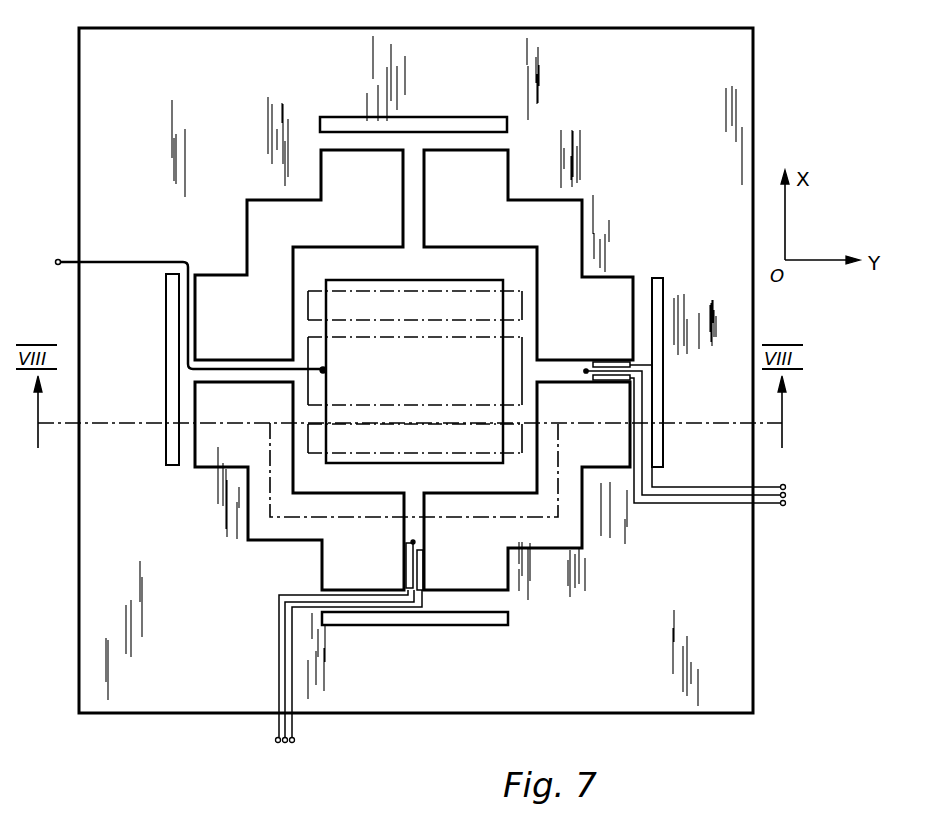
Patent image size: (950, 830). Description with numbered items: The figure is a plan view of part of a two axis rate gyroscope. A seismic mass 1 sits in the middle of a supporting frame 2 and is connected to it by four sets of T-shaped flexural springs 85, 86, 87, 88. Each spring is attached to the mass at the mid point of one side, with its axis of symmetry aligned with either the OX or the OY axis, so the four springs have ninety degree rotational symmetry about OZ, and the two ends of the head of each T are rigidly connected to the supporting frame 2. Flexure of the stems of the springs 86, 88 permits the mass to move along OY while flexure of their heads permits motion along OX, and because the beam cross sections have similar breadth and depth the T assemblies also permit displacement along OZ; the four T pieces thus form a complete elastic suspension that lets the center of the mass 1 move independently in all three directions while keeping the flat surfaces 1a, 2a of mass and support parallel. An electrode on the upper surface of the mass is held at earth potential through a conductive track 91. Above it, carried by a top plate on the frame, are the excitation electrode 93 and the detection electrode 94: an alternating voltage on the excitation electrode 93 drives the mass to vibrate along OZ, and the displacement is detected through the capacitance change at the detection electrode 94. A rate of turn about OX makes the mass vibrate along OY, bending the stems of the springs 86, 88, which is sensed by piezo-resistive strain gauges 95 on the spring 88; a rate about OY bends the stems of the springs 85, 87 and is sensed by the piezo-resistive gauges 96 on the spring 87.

The mass 1 is at (477, 244).
The flat surface of mass 1a is at (358, 262).
The supporting frame 2 is at (763, 600).
The flat surface of support 2a is at (712, 102).
The T-shaped flexural spring 85 is at (188, 385).
The T-shaped flexural spring 86 is at (438, 140).
The T-shaped flexural spring 87 is at (643, 333).
The T-shaped flexural spring 88 is at (433, 605).
The conductive track 91 is at (120, 261).
The excitation electrode 93 is at (314, 395).
The detection electrode 94 is at (316, 296).
The piezo-resistive strain gauges 95 is at (405, 562).
The piezo-resistive gauges 96 is at (612, 382).